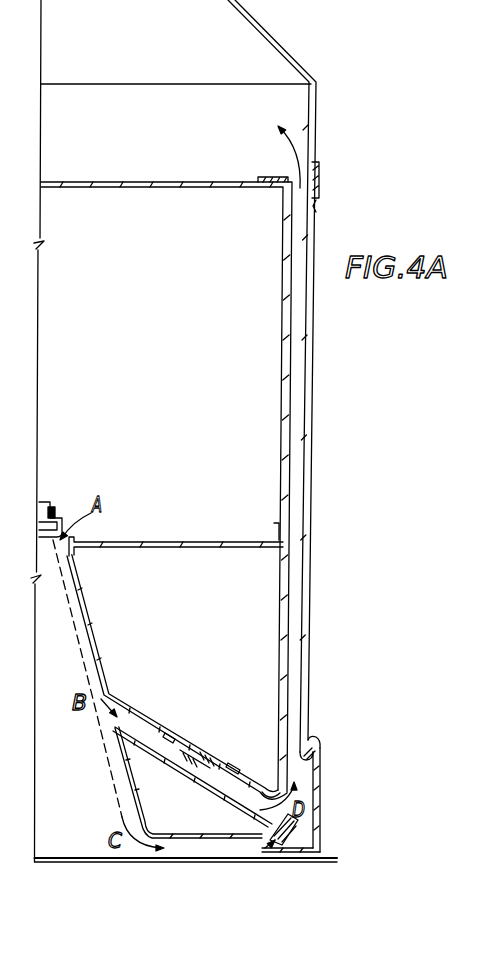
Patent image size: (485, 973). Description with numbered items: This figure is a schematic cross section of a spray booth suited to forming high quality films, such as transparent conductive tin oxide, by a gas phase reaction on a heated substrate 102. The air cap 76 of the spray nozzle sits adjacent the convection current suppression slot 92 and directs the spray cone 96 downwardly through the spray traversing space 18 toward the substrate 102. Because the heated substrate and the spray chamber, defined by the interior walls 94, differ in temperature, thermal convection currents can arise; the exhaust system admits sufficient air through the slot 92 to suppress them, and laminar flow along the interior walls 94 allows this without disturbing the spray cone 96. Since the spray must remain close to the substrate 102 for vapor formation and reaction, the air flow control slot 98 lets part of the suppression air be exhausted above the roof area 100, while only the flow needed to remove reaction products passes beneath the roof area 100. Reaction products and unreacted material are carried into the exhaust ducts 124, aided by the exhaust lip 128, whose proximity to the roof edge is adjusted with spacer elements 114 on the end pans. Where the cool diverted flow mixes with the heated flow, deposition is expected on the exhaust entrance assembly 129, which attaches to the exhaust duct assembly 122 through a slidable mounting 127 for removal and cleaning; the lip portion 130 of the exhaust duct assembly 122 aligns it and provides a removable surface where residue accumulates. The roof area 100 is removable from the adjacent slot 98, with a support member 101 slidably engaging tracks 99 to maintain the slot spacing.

The spray traversing space 18 is at (165, 348).
The air cap 76 is at (53, 508).
The convection current suppression slot 92 is at (78, 556).
The interior walls 94 is at (92, 620).
The spray cone 96 is at (83, 648).
The air flow control slot 98 is at (152, 738).
The tracks 99 is at (233, 767).
The roof area 100 is at (195, 838).
The support member 101 is at (190, 767).
The substrate 102 is at (337, 860).
The spacer elements 114 is at (282, 842).
The exhaust duct assembly 122 is at (310, 490).
The exhaust ducts 124 is at (293, 172).
The slidable mounting 127 is at (320, 742).
The exhaust lip 128 is at (312, 842).
The exhaust entrance assembly 129 is at (322, 797).
The lip portion 130 is at (260, 800).